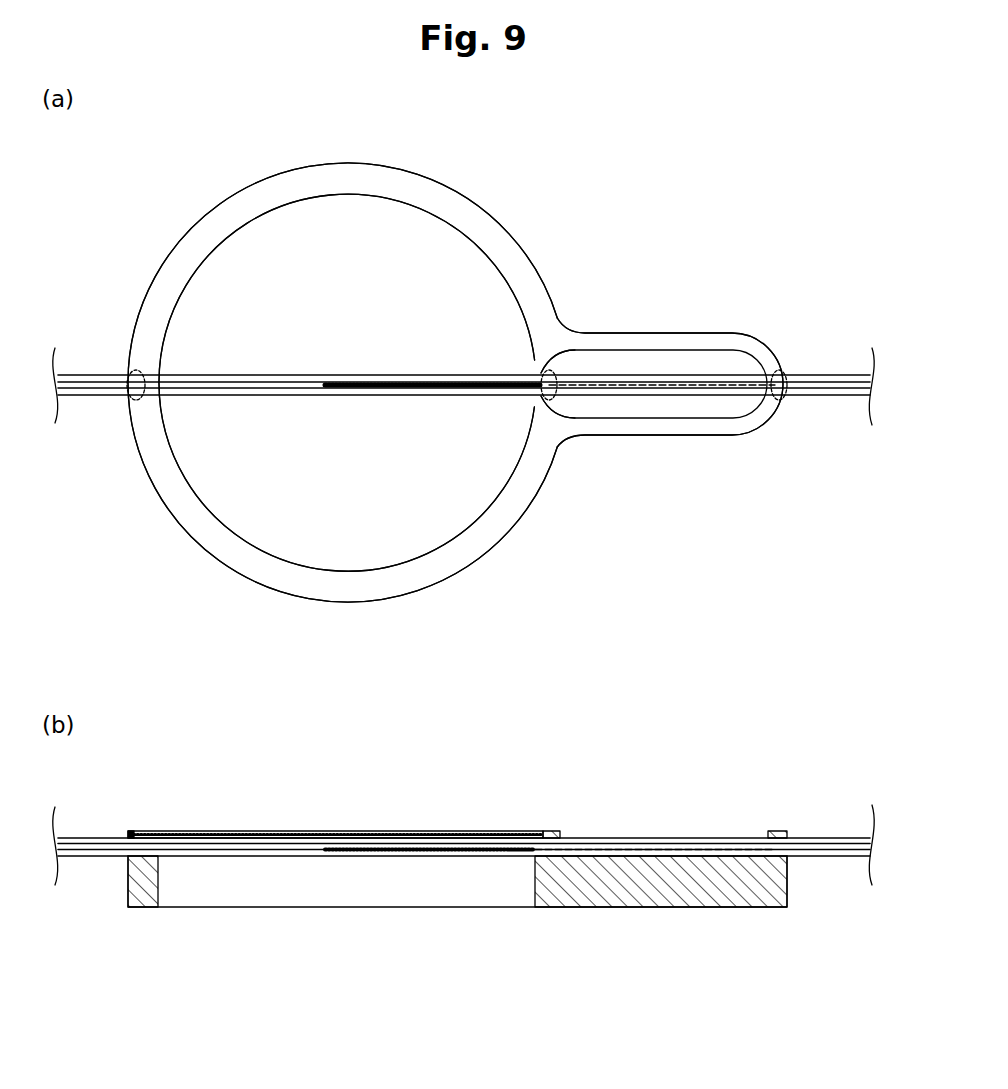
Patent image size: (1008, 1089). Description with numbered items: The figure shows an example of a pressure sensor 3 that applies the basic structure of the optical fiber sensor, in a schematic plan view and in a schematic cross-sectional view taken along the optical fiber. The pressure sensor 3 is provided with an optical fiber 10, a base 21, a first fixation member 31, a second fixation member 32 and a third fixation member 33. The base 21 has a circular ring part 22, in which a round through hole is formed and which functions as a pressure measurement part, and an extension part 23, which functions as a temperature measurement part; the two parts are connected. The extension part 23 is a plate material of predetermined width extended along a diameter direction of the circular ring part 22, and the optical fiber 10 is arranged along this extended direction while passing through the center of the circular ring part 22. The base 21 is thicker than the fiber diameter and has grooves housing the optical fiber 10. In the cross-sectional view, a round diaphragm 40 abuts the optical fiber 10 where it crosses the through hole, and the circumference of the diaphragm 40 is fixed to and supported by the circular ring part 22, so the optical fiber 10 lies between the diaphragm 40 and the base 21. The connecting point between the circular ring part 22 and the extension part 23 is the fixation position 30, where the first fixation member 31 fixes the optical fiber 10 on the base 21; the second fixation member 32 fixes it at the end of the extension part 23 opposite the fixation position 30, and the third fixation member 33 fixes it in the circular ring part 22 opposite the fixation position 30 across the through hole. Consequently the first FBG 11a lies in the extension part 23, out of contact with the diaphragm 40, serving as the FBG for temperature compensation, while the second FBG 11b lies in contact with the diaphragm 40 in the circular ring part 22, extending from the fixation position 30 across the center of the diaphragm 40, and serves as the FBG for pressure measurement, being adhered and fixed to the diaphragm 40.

The pressure sensor 3 is at (639, 186).
The optical fiber 10 is at (834, 368).
The first FBG 11a is at (691, 397).
The second FBG 11b is at (410, 393).
The base 21 is at (194, 222).
The circular ring part 22 is at (500, 228).
The extension part 23 is at (683, 333).
The fixation position 30 is at (543, 406).
The first fixation member 31 is at (552, 362).
The second fixation member 32 is at (780, 369).
The third fixation member 33 is at (130, 369).
The diaphragm 40 is at (240, 831).